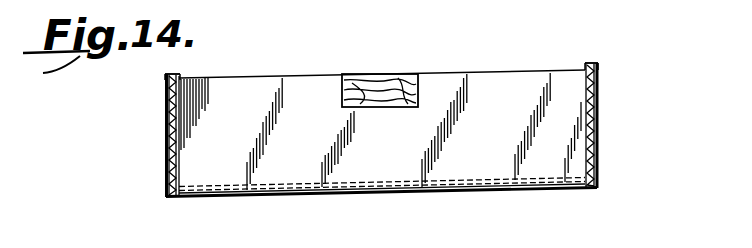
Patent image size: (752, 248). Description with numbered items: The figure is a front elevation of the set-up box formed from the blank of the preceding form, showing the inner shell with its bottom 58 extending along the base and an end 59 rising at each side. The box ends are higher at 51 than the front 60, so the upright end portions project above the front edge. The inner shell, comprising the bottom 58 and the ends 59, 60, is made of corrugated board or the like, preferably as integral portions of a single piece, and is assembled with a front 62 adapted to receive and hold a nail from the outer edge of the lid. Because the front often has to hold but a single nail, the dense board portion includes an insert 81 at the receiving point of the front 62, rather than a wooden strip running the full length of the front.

The higher portion of the box ends 51 is at (180, 74).
The bottom 58 is at (363, 186).
The end 59 is at (167, 143).
The front 60 is at (598, 134).
The front 62 is at (298, 100).
The insert 81 is at (402, 74).